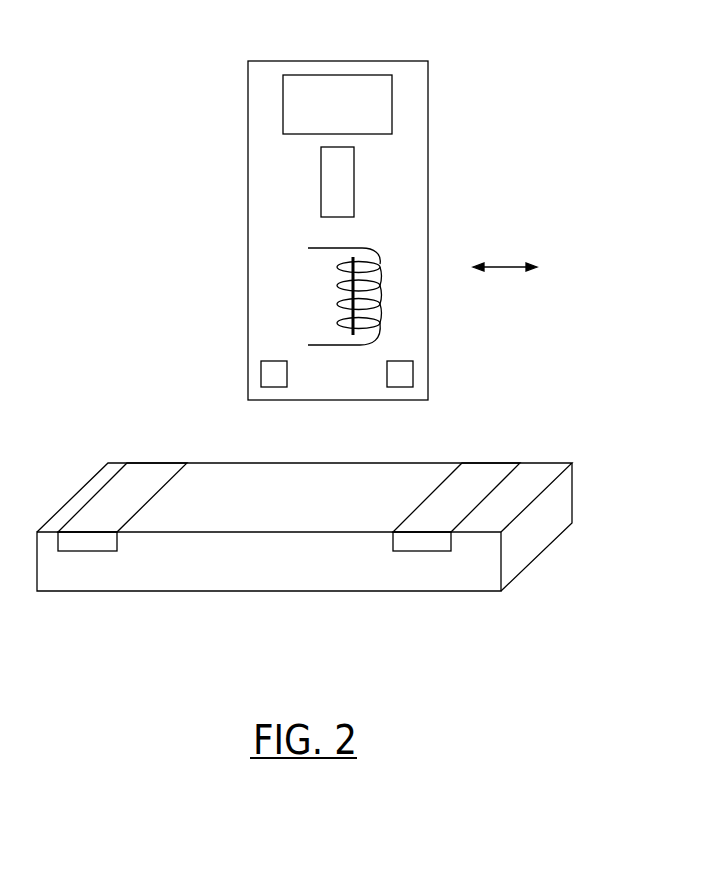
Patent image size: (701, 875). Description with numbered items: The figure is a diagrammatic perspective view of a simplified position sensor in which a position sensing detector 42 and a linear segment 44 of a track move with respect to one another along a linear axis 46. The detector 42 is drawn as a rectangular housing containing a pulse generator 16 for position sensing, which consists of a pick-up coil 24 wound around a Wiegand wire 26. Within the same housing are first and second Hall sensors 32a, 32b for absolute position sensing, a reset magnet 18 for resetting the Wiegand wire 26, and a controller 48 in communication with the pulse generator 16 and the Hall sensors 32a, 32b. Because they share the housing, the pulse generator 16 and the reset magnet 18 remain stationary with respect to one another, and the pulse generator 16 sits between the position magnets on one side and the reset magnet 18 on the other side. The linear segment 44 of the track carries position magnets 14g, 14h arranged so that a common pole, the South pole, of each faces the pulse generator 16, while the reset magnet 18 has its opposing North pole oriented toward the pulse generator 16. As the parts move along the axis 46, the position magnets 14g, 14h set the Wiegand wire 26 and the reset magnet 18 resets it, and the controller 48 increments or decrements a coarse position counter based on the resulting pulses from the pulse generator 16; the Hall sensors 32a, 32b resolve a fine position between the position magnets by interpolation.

The position sensing detector 42 is at (248, 110).
The controller 48 is at (347, 100).
The reset magnet 18 is at (355, 173).
The pulse generator 16 is at (313, 277).
The Wiegand wire 26 is at (352, 332).
The pick-up coil 24 is at (332, 346).
The first Hall sensor 32a is at (275, 374).
The second Hall sensor 32b is at (398, 375).
The linear axis 46 is at (512, 267).
The linear segment of the track 44 is at (304, 527).
The position magnet 14g is at (150, 463).
The position magnet 14h is at (490, 463).